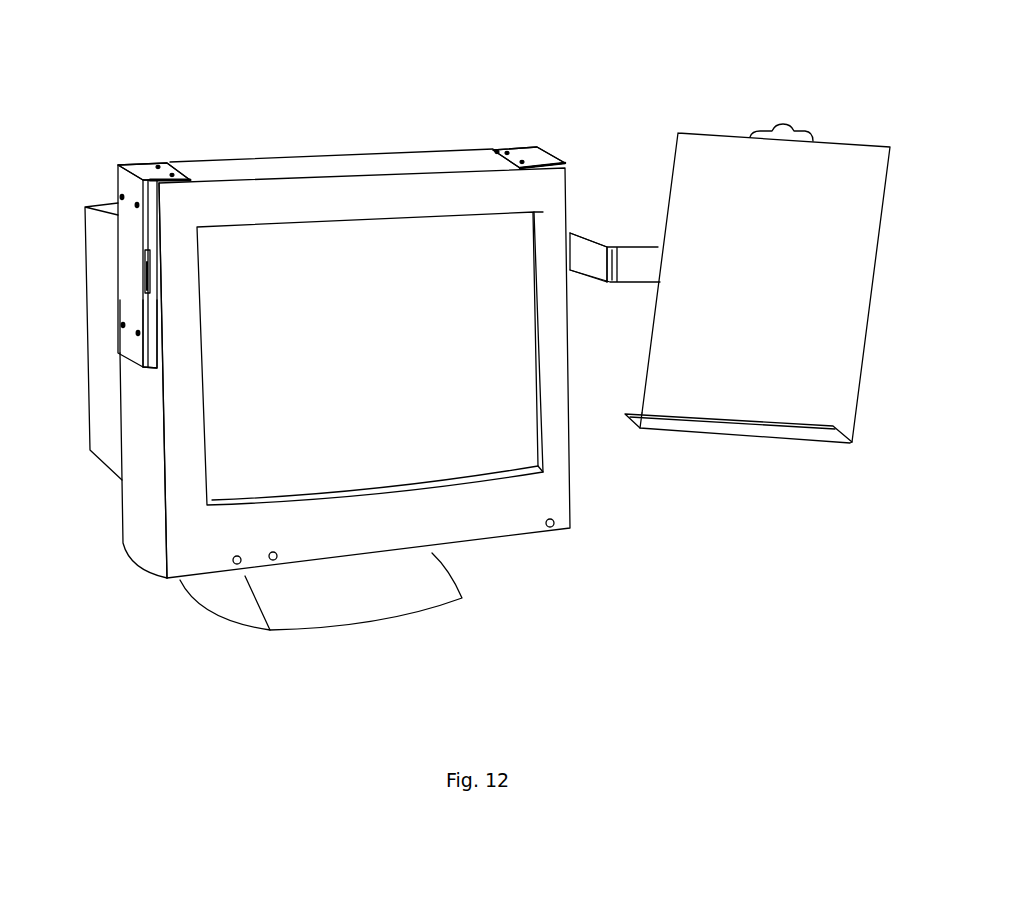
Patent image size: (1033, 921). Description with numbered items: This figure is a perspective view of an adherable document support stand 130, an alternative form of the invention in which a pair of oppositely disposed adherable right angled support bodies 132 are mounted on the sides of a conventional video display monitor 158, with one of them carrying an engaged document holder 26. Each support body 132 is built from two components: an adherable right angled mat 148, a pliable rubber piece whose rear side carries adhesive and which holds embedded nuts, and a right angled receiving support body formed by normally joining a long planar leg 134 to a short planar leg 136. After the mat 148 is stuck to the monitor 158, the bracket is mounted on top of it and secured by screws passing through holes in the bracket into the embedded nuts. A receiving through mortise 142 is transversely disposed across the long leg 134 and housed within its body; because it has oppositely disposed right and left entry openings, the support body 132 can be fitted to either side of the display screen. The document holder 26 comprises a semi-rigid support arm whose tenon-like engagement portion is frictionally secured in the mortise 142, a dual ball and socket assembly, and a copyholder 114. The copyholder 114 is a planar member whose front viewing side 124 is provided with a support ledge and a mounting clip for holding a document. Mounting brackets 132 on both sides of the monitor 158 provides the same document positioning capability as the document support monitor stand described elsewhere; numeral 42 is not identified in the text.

The adherable document support stand 130 is at (617, 96).
The adherable right angled support body 132 is at (107, 158).
The short planar leg 136 is at (150, 173).
The slot 42 is at (148, 270).
The long planar leg 134 is at (122, 291).
The adherable right angled mat 148 is at (155, 342).
The receiving through mortise 142 is at (573, 229).
The document holder 26 is at (627, 295).
The front viewing side 124 is at (830, 332).
The copyholder 114 is at (783, 446).
The video display monitor 158 is at (492, 518).